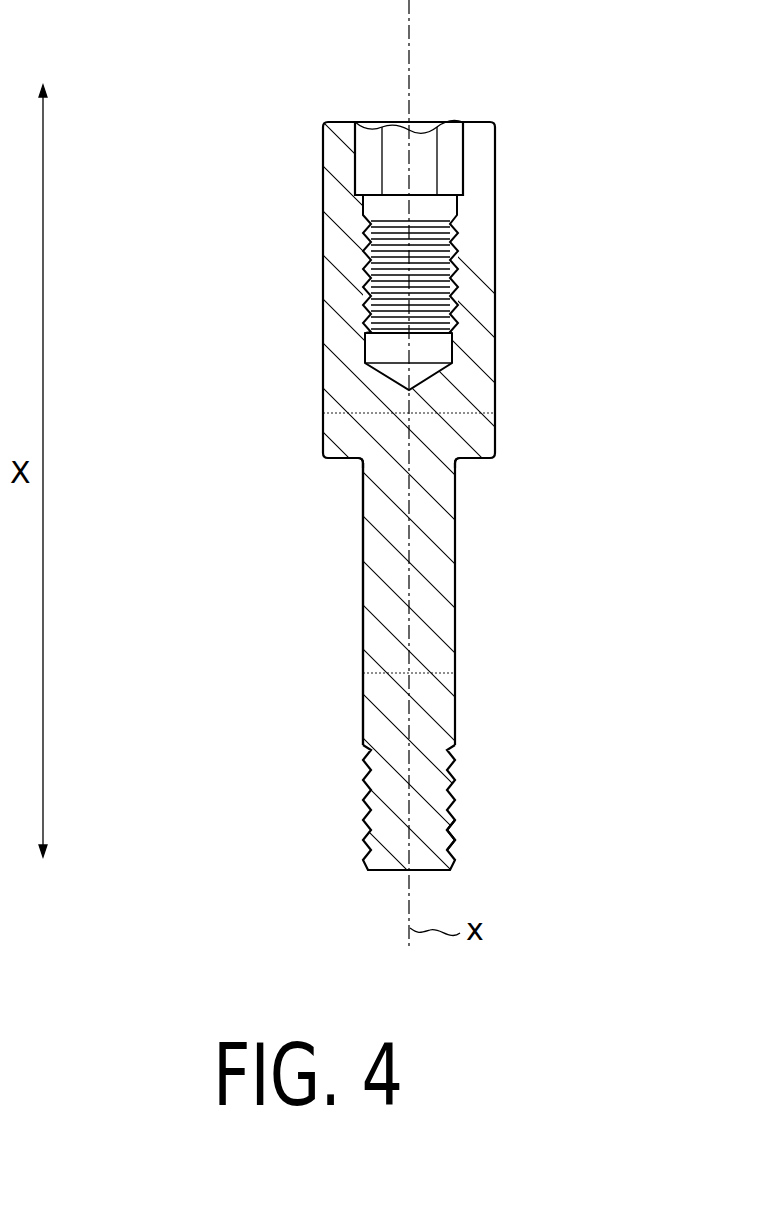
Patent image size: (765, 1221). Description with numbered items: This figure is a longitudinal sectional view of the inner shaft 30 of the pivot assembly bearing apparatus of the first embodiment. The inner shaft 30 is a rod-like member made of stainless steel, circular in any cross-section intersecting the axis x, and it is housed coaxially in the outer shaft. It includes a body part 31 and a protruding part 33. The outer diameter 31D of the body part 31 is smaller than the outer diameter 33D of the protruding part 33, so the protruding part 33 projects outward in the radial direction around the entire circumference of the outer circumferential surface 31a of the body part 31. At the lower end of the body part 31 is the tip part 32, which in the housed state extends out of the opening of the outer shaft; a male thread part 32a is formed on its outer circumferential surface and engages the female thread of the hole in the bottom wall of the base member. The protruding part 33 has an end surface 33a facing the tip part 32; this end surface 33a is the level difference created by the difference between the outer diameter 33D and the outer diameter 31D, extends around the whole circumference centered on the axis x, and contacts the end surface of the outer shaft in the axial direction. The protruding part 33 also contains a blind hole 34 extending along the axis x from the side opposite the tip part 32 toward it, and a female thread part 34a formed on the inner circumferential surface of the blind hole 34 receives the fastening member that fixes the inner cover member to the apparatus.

The inner shaft 30 is at (328, 27).
The body part 31 is at (445, 575).
The outer circumferential surface of the body part 31a is at (363, 528).
The outer diameter of the body part 31D is at (487, 673).
The tip part 32 is at (482, 792).
The male thread part 32a is at (455, 838).
The protruding part 33 is at (335, 450).
The end surface 33a is at (466, 462).
The outer diameter of the protruding part 33D is at (525, 413).
The blind hole 34 is at (452, 150).
The female thread part 34a is at (455, 256).